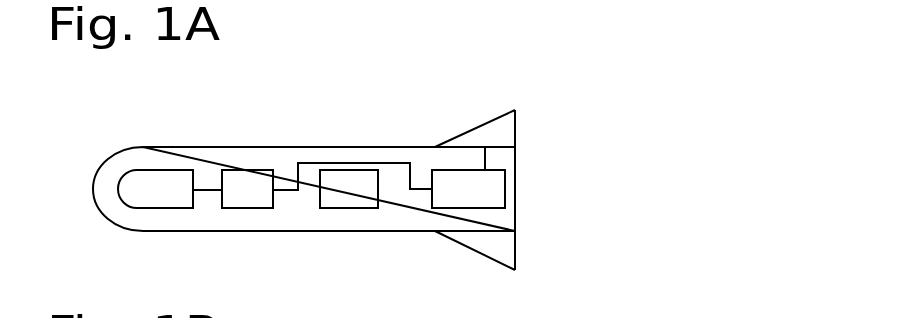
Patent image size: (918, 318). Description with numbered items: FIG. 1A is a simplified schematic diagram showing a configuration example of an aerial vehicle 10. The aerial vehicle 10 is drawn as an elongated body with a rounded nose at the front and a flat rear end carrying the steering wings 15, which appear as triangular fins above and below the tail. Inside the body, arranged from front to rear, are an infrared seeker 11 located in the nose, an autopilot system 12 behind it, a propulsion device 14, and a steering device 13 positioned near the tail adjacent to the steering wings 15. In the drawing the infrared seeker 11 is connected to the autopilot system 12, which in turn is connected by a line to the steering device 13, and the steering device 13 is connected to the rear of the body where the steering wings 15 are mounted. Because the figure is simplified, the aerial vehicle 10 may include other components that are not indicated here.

The aerial vehicle 10 is at (333, 128).
The infrared seeker 11 is at (158, 208).
The autopilot system 12 is at (237, 208).
The steering device 13 is at (487, 208).
The propulsion device 14 is at (345, 208).
The steering wings 15 is at (508, 248).